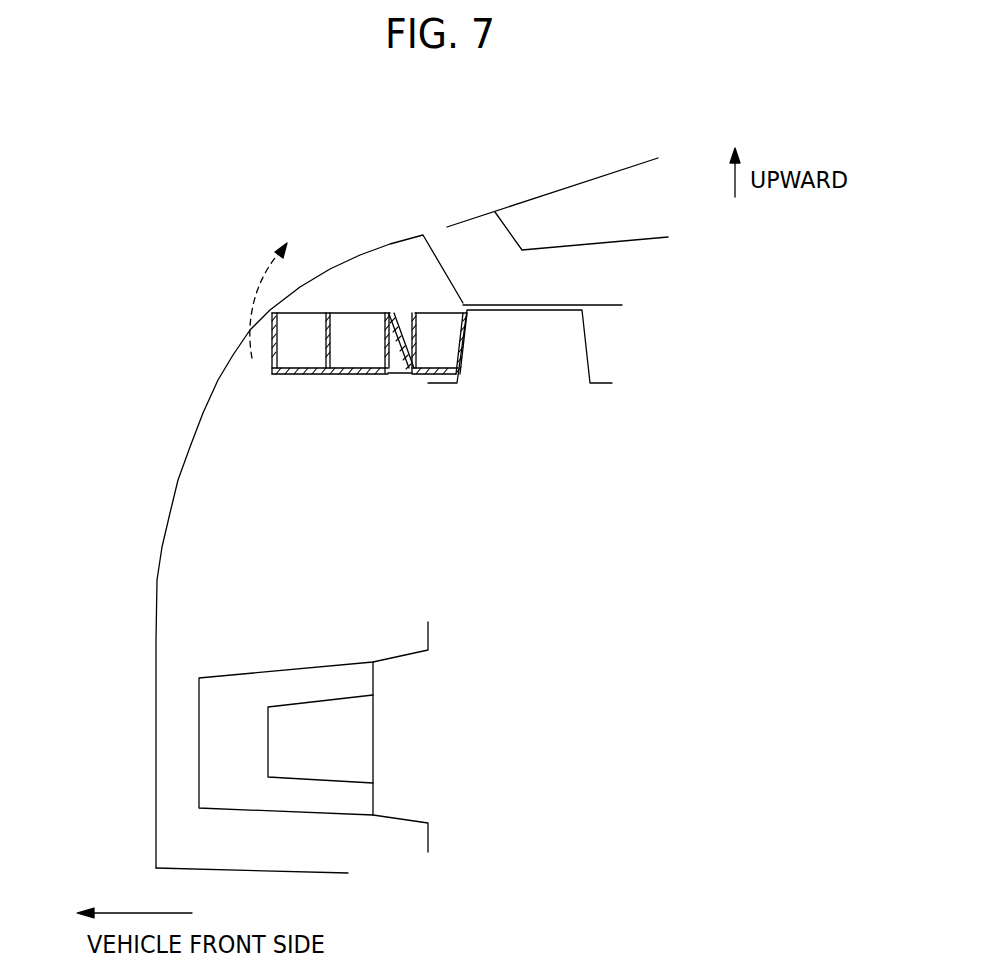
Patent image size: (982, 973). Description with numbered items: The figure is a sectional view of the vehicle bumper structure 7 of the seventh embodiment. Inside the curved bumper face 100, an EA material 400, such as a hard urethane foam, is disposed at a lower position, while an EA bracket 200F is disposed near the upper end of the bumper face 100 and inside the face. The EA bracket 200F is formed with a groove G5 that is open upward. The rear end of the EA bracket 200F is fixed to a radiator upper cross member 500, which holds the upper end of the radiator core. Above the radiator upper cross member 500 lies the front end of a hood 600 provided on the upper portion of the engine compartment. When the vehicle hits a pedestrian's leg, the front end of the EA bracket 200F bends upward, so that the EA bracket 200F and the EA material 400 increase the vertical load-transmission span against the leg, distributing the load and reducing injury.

The vehicle bumper structure 7 is at (167, 214).
The bumper face 100 is at (217, 383).
The EA bracket 200F is at (365, 400).
The groove G5 is at (402, 300).
The EA material 400 is at (275, 670).
The radiator upper cross member 500 is at (588, 357).
The hood 600 is at (610, 172).